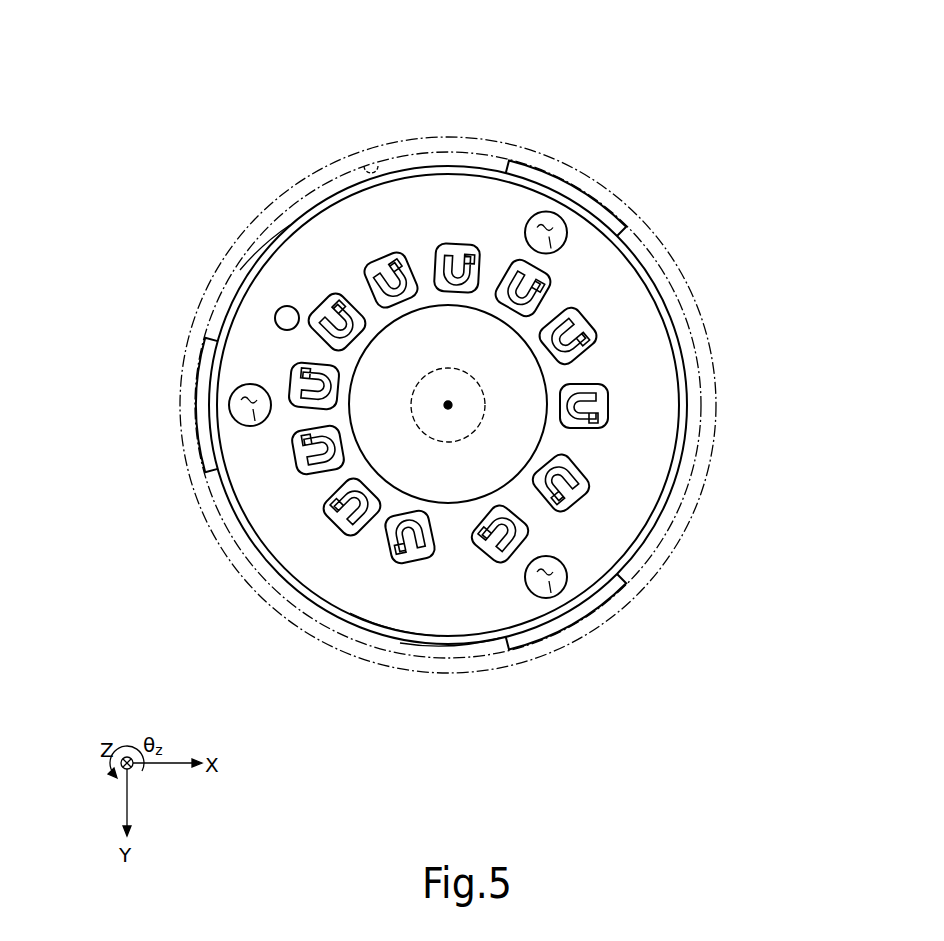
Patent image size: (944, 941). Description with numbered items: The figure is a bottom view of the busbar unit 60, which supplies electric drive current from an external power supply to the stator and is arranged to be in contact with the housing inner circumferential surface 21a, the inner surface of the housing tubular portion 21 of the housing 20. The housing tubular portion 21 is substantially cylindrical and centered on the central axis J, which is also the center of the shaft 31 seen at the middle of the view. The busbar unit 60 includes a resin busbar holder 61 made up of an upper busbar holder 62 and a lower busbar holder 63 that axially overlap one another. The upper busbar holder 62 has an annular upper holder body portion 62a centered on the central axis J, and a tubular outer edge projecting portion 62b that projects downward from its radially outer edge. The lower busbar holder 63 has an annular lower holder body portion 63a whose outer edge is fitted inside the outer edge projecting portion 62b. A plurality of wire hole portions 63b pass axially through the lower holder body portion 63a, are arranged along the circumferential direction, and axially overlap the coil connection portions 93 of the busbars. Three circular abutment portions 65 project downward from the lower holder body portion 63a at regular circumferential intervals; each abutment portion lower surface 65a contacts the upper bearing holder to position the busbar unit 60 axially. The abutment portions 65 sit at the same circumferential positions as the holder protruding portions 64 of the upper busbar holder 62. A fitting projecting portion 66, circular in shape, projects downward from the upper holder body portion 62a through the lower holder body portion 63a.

The busbar unit 60 is at (698, 101).
The housing 20 is at (448, 405).
The housing tubular portion 21 is at (493, 136).
The housing inner circumferential surface 21a is at (370, 160).
The shaft 31 is at (447, 400).
The central axis J is at (455, 407).
The busbar holder 61 is at (448, 453).
The upper busbar holder 62 is at (290, 594).
The upper holder body portion 62a is at (451, 643).
The outer edge projecting portion 62b is at (262, 256).
The lower busbar holder 63 is at (341, 621).
The lower holder body portion 63a is at (394, 616).
The wire hole portion 63b is at (374, 260).
The holder protruding portion 64 is at (595, 200).
The abutment portion 65 is at (562, 249).
The abutment portion lower surface 65a is at (540, 227).
The fitting projecting portion 66 is at (283, 316).
The coil connection portion 93 is at (458, 256).